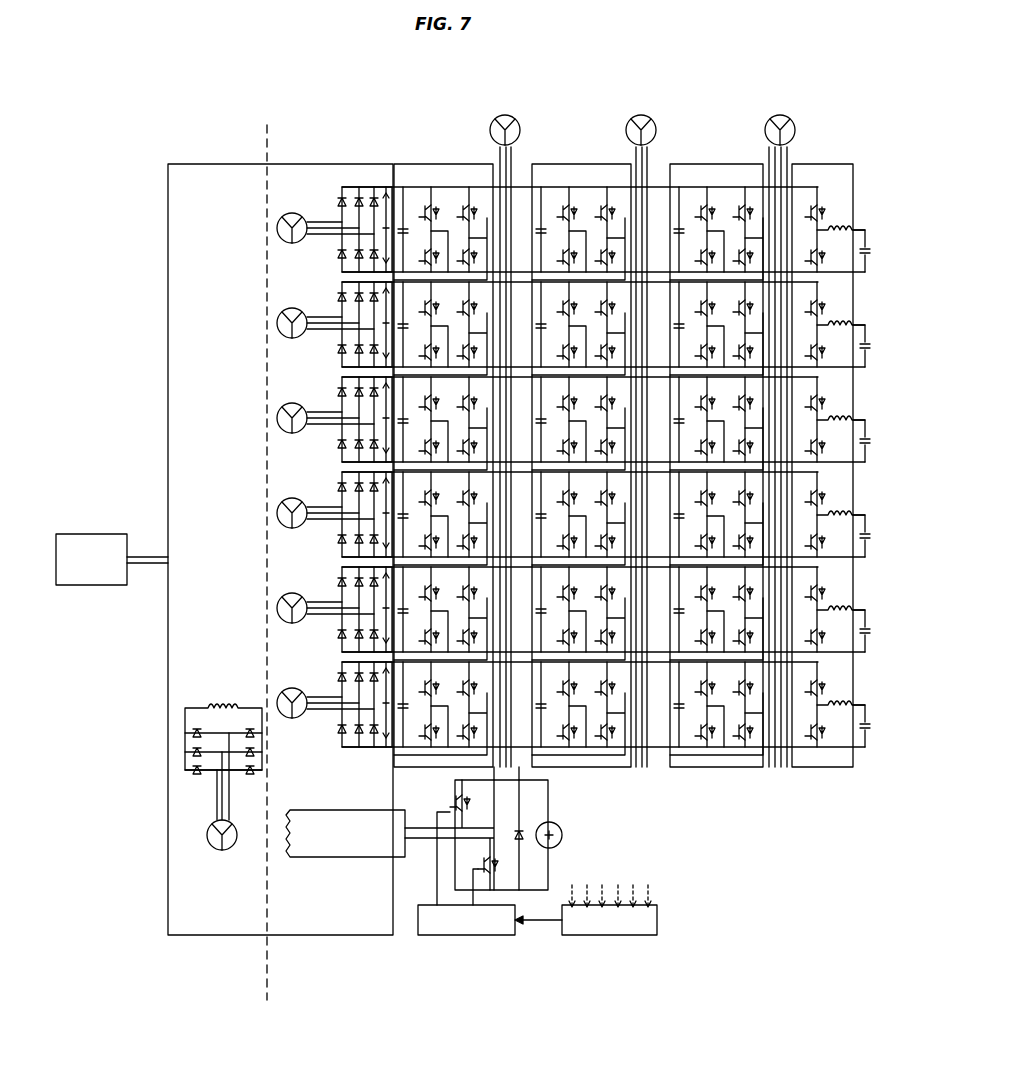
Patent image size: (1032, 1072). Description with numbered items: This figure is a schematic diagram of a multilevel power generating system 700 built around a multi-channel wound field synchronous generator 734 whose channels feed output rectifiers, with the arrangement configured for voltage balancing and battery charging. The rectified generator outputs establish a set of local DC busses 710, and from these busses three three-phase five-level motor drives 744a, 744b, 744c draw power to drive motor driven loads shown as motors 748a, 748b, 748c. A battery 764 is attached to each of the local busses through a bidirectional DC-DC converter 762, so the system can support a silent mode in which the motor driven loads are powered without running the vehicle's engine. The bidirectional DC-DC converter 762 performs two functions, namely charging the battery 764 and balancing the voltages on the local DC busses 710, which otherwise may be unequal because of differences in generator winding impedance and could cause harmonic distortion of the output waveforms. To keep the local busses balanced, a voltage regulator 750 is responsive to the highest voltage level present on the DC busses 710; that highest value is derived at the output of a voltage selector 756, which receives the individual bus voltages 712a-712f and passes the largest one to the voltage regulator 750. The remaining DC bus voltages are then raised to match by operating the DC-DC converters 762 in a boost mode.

The multilevel power generating system 700 is at (714, 80).
The multi-channel wound field synchronous generator 734 is at (392, 97).
The 3-phase 5-level motor drive 744a is at (440, 172).
The 3-phase 5-level motor drive 744b is at (568, 172).
The 3-phase 5-level motor drive 744c is at (727, 180).
The motor 748a is at (505, 115).
The motor 748b is at (641, 115).
The motor 748c is at (780, 116).
The DC busses 710 is at (519, 167).
The bidirectional DC-DC converter 762 is at (850, 152).
The battery 764 is at (878, 200).
The voltage regulator 750 is at (482, 931).
The voltage selector 756 is at (625, 931).
The voltages 712a-712f is at (383, 762).